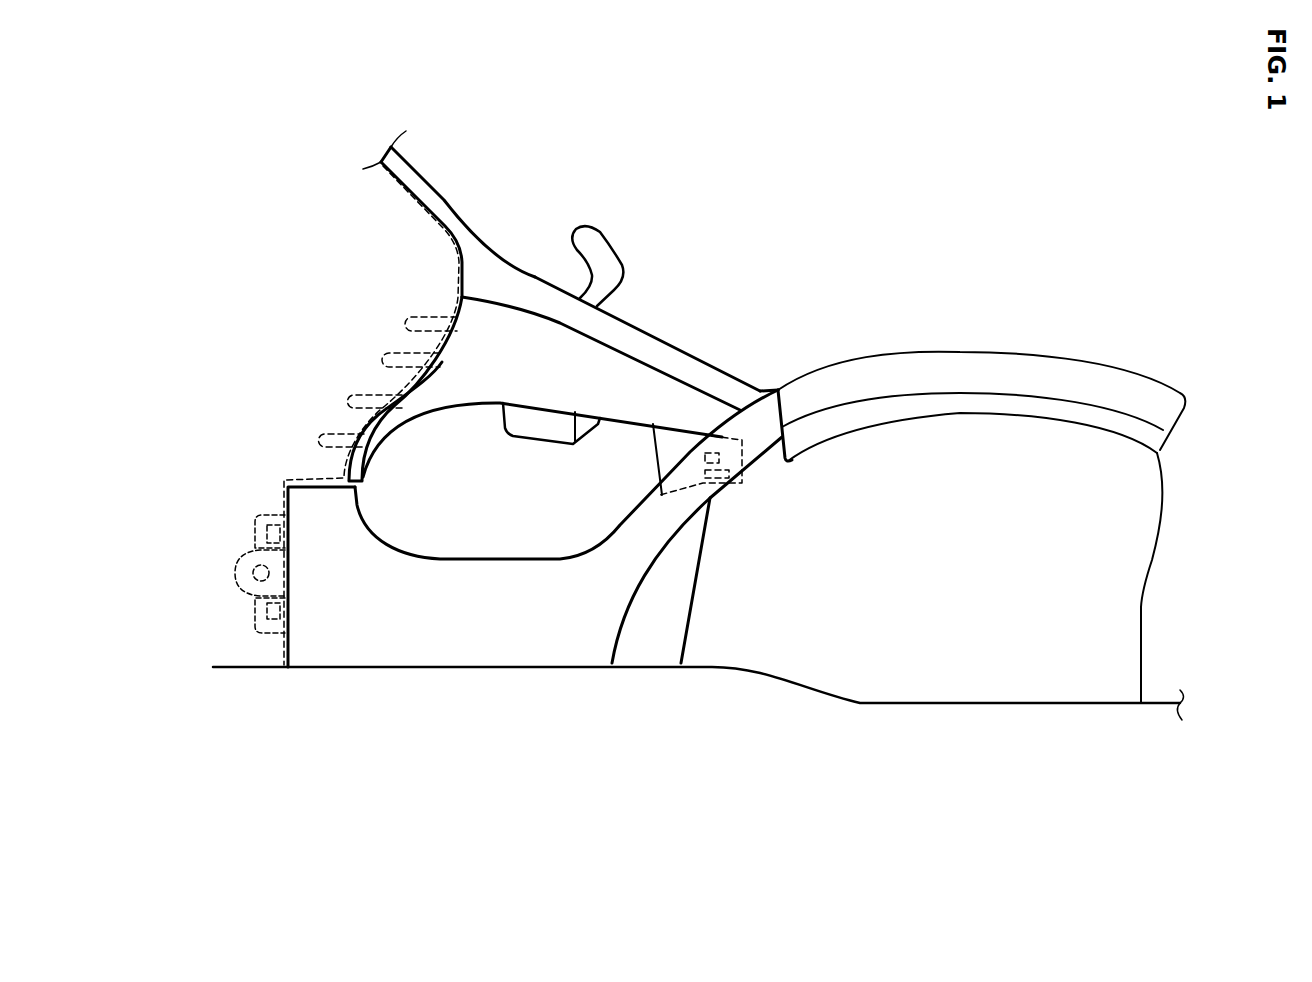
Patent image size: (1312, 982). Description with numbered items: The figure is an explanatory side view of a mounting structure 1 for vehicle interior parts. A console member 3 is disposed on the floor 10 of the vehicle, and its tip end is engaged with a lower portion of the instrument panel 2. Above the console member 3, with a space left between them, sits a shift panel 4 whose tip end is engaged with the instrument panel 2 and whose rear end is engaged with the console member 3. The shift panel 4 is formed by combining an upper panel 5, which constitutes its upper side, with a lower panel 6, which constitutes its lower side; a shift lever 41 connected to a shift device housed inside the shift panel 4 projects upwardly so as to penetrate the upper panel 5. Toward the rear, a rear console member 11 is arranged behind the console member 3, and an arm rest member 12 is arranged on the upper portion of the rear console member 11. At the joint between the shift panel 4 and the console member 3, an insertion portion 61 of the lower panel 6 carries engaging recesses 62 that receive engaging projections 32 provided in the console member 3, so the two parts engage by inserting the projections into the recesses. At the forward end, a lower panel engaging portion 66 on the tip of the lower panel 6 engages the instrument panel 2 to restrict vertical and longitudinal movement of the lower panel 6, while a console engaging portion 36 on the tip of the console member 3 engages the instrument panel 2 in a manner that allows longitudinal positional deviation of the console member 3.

The mounting structure 1 is at (675, 172).
The instrument panel 2 is at (423, 197).
The console member 3 is at (448, 620).
The shift panel 4 is at (728, 371).
The upper panel 5 is at (648, 344).
The lower panel 6 is at (510, 340).
The floor 10 is at (1153, 697).
The rear console member 11 is at (942, 632).
The arm rest member 12 is at (967, 373).
The engaging projections 32 is at (762, 415).
The console engaging portion 36 is at (237, 573).
The shift lever 41 is at (590, 247).
The insertion portion 61 is at (670, 452).
The engaging recesses 62 is at (712, 433).
The lower panel engaging portion 66 is at (347, 405).